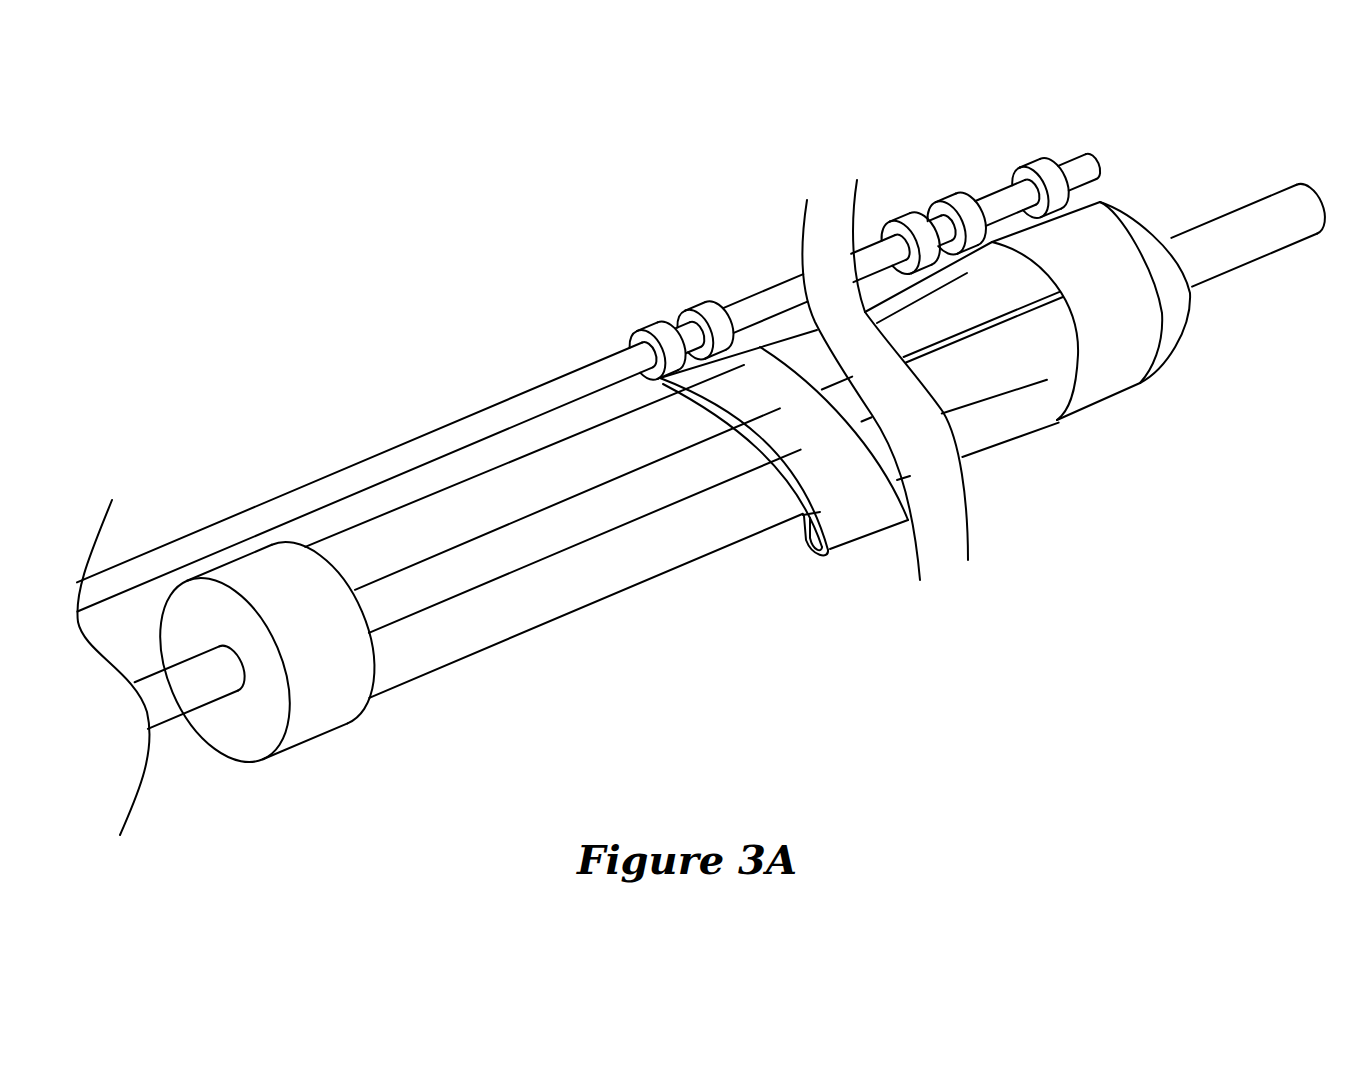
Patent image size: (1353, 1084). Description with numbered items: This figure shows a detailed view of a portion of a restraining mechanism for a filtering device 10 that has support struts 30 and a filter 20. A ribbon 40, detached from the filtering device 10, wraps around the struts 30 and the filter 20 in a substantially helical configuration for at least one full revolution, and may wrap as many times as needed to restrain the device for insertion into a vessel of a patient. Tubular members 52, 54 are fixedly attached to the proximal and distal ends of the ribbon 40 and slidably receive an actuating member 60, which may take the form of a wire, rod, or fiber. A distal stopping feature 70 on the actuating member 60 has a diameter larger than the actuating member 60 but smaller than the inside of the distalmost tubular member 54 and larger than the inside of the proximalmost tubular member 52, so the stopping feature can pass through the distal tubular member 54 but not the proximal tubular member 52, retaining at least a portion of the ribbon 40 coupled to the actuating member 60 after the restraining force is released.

The filtering device 10 is at (318, 790).
The filter 20 is at (1019, 445).
The support struts 30 is at (452, 550).
The ribbon 40 is at (868, 543).
The tubular member 52 is at (647, 313).
The tubular member 54 is at (906, 200).
The actuating member 60 is at (492, 398).
The distal stopping feature 70 is at (1048, 158).